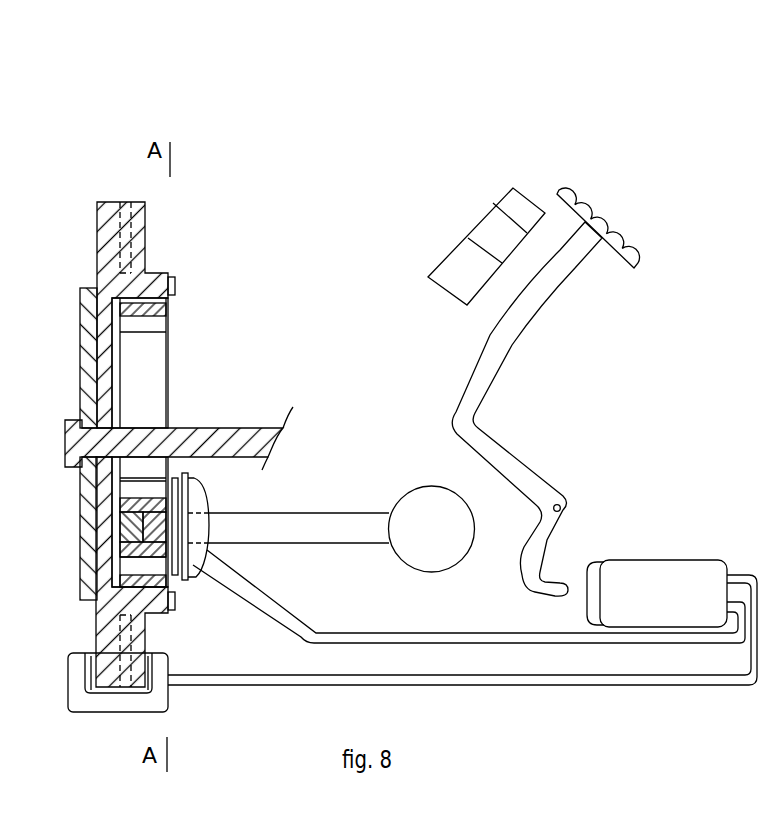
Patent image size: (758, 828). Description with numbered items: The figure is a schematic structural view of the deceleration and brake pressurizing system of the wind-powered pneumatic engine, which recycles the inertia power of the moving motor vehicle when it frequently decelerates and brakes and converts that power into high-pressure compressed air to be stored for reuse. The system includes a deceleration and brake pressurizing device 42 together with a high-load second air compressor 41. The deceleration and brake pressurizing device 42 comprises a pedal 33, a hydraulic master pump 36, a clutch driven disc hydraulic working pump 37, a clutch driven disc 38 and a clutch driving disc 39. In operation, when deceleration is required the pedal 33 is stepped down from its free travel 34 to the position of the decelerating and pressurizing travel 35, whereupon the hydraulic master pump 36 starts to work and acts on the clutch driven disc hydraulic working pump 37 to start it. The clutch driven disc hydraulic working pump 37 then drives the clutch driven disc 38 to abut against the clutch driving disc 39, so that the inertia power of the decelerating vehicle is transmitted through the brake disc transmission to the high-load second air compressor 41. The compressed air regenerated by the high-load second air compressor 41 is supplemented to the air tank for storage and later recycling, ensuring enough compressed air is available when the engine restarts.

The pedal 33 is at (598, 220).
The free travel 34 is at (508, 202).
The decelerating and pressurizing travel 35 is at (487, 225).
The hydraulic master pump 36 is at (678, 562).
The clutch driven disc hydraulic working pump 37 is at (207, 497).
The clutch driven disc 38 is at (193, 477).
The clutch driving disc 39 is at (178, 477).
The high-load second air compressor 41 is at (413, 487).
The deceleration and brake pressurizing device 42 is at (172, 573).